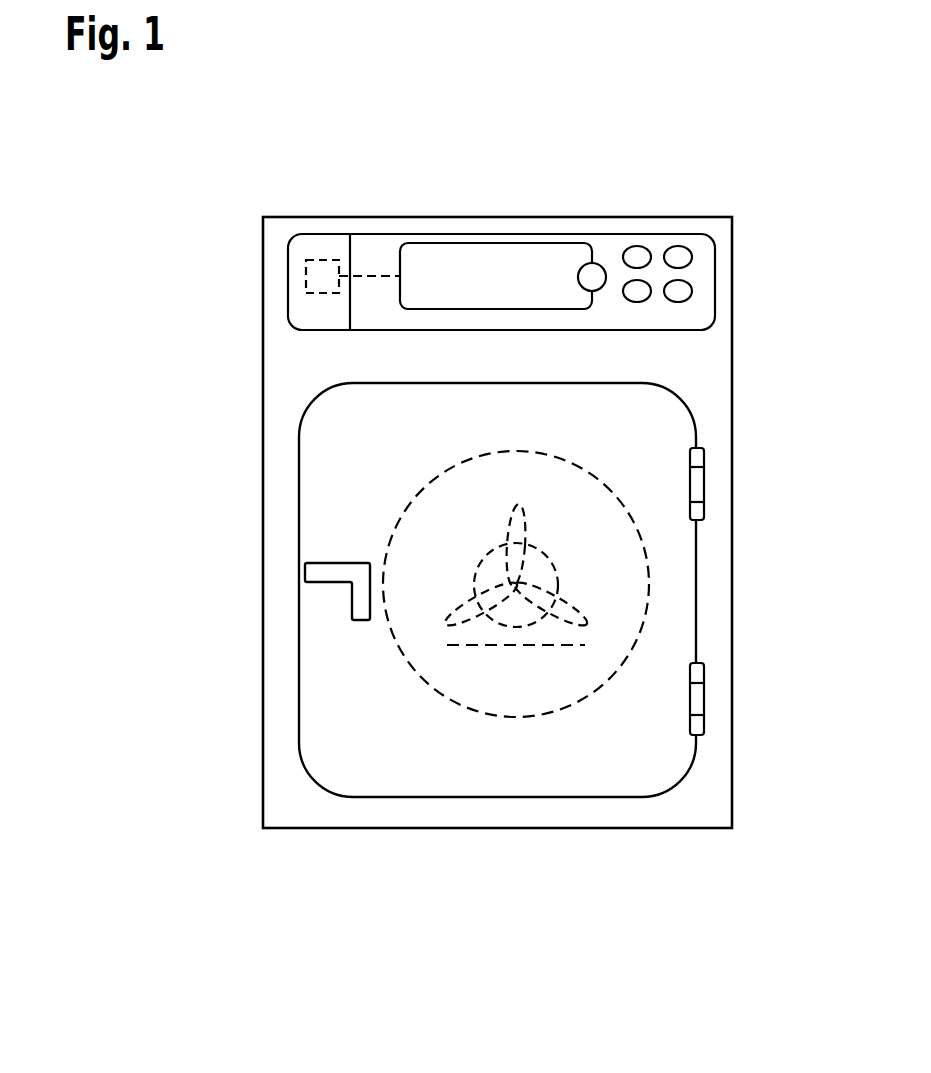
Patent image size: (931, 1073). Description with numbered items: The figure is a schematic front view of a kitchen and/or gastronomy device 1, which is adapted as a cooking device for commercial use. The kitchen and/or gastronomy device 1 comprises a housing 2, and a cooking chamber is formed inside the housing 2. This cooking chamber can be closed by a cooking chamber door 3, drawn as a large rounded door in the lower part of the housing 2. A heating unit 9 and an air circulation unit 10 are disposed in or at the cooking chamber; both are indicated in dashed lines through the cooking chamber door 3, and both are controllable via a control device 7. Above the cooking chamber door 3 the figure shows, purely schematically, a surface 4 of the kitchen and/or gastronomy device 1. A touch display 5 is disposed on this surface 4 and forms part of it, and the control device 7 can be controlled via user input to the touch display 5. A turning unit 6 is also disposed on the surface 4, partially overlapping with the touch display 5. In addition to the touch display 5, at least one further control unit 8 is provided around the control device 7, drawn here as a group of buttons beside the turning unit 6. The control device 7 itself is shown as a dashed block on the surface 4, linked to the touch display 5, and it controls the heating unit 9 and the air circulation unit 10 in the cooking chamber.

The kitchen and/or gastronomy device 1 is at (248, 180).
The housing 2 is at (263, 276).
The cooking chamber door 3 is at (694, 418).
The surface 4 is at (371, 257).
The touch display 5 is at (505, 243).
The turning unit 6 is at (576, 263).
The control device 7 is at (311, 258).
The further control unit 8 is at (634, 246).
The heating unit 9 is at (572, 660).
The air circulation unit 10 is at (568, 605).